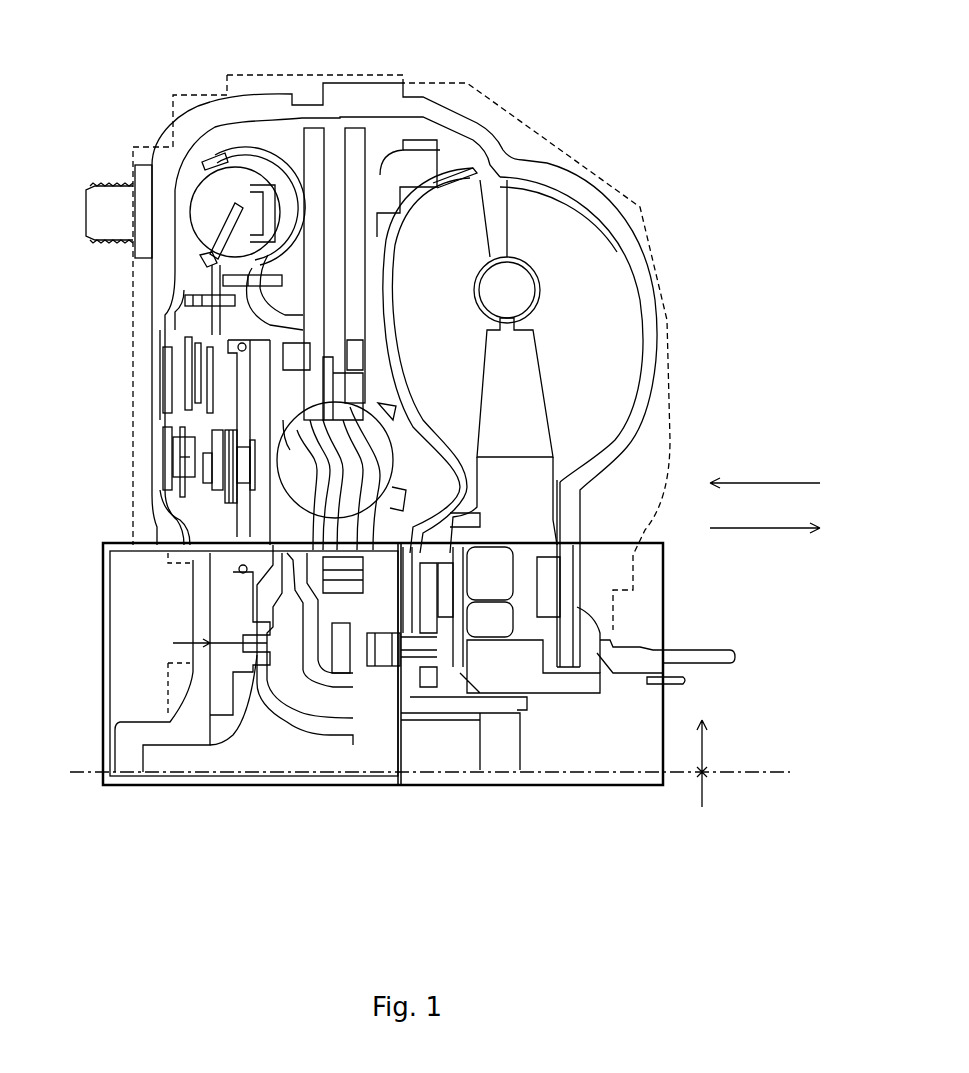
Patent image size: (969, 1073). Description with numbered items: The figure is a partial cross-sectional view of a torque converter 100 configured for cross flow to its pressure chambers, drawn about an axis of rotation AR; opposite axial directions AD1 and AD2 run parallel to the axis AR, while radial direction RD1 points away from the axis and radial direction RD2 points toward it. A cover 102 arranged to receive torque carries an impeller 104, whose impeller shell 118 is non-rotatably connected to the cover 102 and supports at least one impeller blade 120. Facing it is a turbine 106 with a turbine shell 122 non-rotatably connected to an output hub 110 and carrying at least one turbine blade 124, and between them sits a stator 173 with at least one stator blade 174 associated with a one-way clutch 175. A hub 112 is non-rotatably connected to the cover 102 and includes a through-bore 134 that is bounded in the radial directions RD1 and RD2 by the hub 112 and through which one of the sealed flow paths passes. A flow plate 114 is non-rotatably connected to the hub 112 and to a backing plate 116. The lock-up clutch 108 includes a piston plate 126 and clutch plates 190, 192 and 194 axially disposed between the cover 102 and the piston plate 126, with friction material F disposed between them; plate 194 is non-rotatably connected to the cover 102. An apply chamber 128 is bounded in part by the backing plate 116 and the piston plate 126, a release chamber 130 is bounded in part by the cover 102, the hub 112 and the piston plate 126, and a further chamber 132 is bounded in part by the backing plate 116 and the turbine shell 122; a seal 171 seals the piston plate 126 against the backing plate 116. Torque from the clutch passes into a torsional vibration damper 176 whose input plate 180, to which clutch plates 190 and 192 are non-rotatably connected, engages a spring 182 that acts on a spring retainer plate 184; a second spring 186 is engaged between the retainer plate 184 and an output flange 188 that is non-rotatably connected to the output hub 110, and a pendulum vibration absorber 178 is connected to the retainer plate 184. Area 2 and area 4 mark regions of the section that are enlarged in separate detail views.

The torque converter 100 is at (672, 113).
The cover 102 is at (260, 104).
The impeller 104 is at (653, 254).
The turbine 106 is at (466, 158).
The lock-up clutch 108 is at (150, 383).
The output hub 110 is at (523, 707).
The hub 112 is at (237, 723).
The flow plate 114 is at (287, 720).
The backing plate 116 is at (327, 687).
The impeller shell 118 is at (640, 270).
The impeller blade 120 is at (597, 303).
The turbine shell 122 is at (435, 183).
The turbine blade 124 is at (444, 306).
The piston plate 126 is at (239, 342).
The apply chamber 128 is at (175, 531).
The release chamber 130 is at (190, 507).
The chamber 132 is at (372, 147).
The through-bore 134 is at (253, 643).
The seal 171 is at (265, 285).
The stator 173 is at (523, 520).
The stator blade 174 is at (513, 383).
The one-way clutch 175 is at (530, 588).
The torsional vibration damper 176 is at (199, 142).
The pendulum vibration absorber 178 is at (337, 128).
The input plate 180 is at (223, 228).
The spring 182 is at (222, 195).
The spring retainer plate 184 is at (225, 160).
The spring 186 is at (392, 435).
The output flange 188 is at (340, 657).
The clutch plate 190 is at (190, 325).
The clutch plate 192 is at (185, 412).
The clutch plate 194 is at (188, 400).
The friction material F is at (165, 352).
The area 2 is at (103, 653).
The section line 4 is at (102, 677).
The axial direction AD1 is at (745, 483).
The axial direction AD2 is at (763, 528).
The radial direction RD1 is at (707, 748).
The radial direction RD2 is at (707, 792).
The axis of rotation AR is at (750, 772).